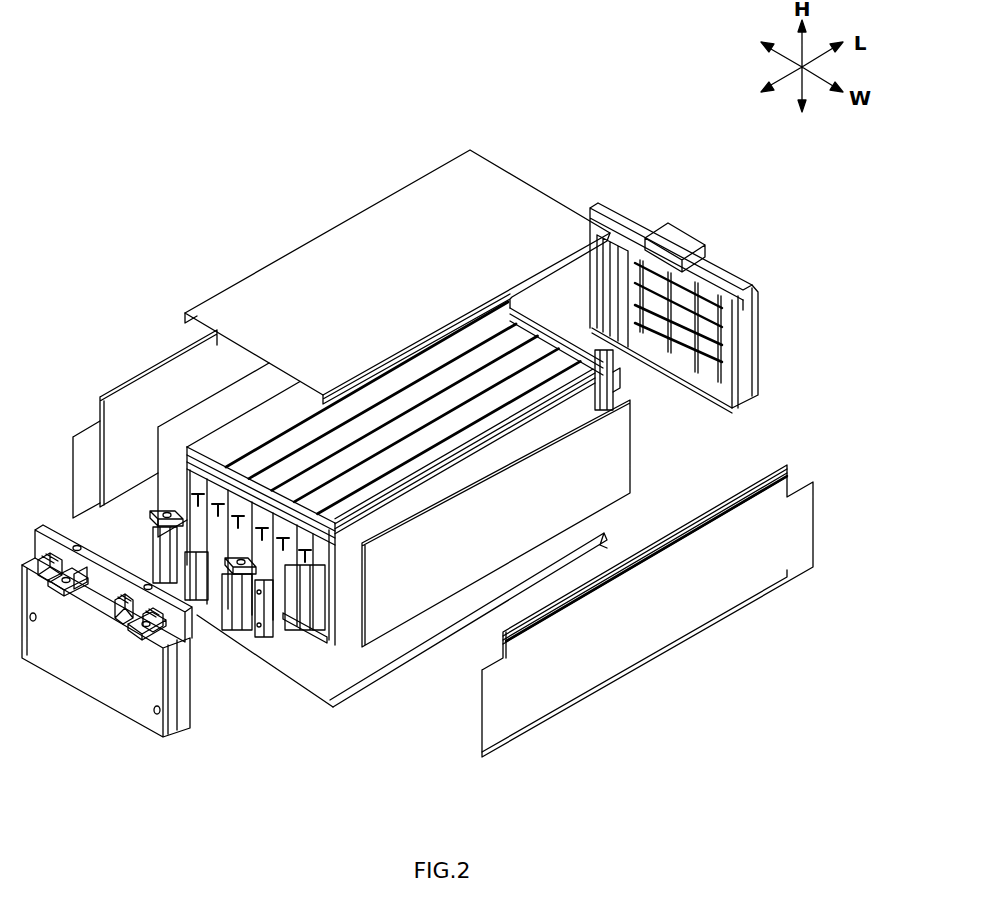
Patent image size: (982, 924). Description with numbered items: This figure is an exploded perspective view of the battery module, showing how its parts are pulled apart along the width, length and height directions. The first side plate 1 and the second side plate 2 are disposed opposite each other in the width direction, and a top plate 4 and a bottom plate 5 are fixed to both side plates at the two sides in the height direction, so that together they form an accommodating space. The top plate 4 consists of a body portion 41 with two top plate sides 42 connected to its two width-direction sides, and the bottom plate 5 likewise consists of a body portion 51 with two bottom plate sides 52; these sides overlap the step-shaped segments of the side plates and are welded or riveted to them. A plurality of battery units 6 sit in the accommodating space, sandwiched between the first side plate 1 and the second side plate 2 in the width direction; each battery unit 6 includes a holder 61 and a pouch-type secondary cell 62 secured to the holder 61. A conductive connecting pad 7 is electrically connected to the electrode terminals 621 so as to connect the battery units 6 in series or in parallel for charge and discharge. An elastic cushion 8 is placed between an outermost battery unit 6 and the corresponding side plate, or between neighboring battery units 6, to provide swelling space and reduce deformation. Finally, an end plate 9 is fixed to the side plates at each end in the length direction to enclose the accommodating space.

The first side plate 1 is at (152, 367).
The second side plate 2 is at (710, 603).
The top plate 4 is at (397, 254).
The body portion 41 is at (385, 222).
The top plate side 42 is at (567, 258).
The bottom plate 5 is at (402, 656).
The body portion 51 is at (323, 690).
The bottom plate side 52 is at (378, 675).
The battery unit 6 is at (273, 429).
The holder 61 is at (602, 353).
The pouch-type secondary cell 62 is at (614, 378).
The electrode terminal 621 is at (326, 622).
The conductive connecting pad 7 is at (160, 547).
The elastic cushion 8 is at (170, 440).
The end plate 9 is at (100, 667).